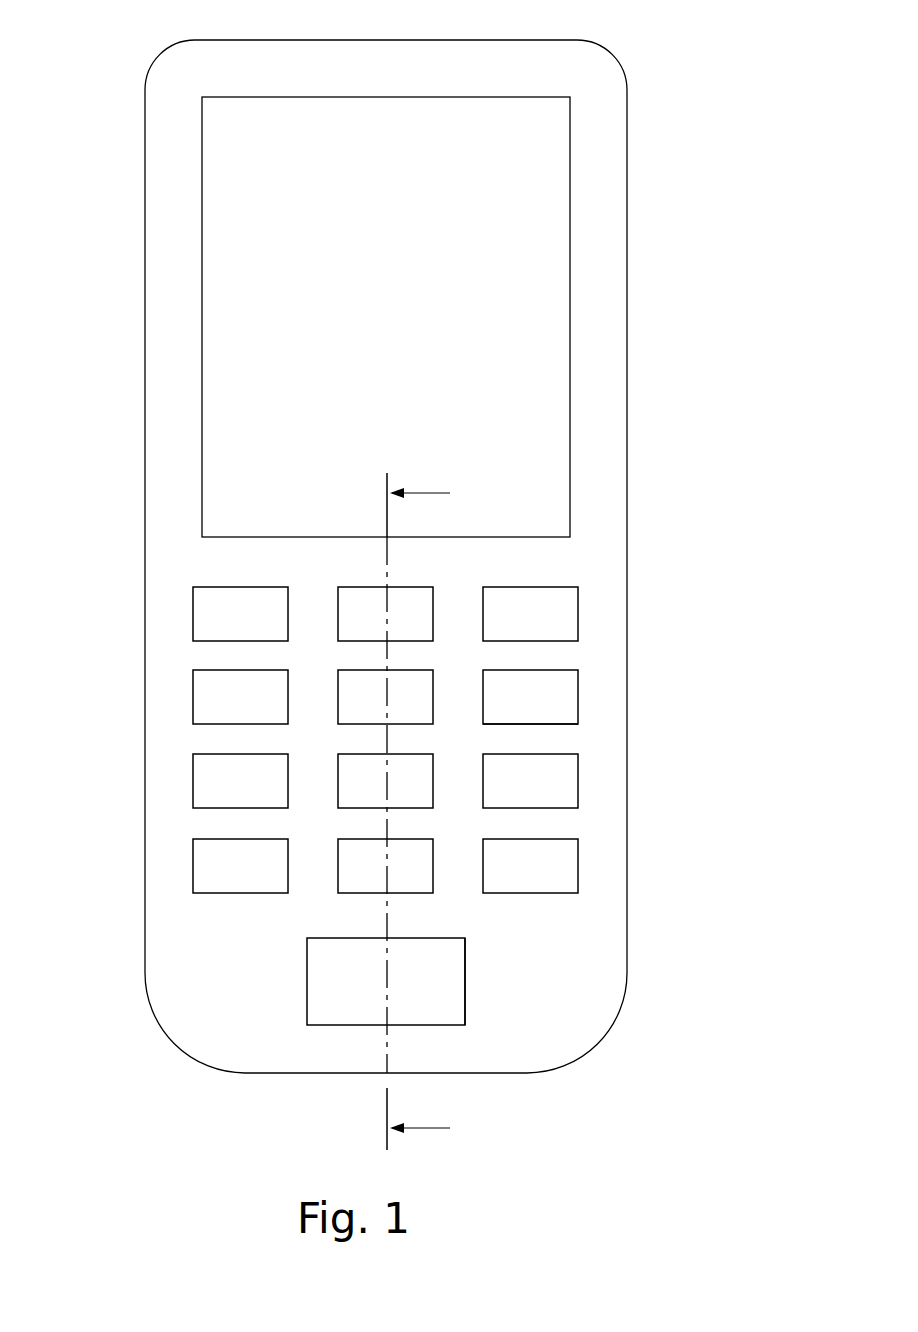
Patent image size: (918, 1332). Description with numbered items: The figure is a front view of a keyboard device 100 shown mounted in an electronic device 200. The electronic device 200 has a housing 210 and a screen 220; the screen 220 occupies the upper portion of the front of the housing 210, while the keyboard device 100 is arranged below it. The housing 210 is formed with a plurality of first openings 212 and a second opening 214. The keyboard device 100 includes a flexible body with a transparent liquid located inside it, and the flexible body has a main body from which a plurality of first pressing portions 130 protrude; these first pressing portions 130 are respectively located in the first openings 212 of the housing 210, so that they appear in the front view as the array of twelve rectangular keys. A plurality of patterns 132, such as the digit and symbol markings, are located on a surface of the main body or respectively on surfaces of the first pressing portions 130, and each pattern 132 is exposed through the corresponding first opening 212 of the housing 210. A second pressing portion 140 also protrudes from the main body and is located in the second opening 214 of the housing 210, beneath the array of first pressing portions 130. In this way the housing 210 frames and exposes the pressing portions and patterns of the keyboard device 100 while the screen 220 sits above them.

The electronic device 200 is at (75, 40).
The housing 210 is at (580, 993).
The screen 220 is at (543, 295).
The keyboard device 100 is at (404, 716).
The first pressing portion 130 is at (609, 678).
The pattern 132 is at (538, 698).
The first opening 212 is at (552, 725).
The second pressing portion 140 is at (323, 982).
The second opening 214 is at (466, 996).